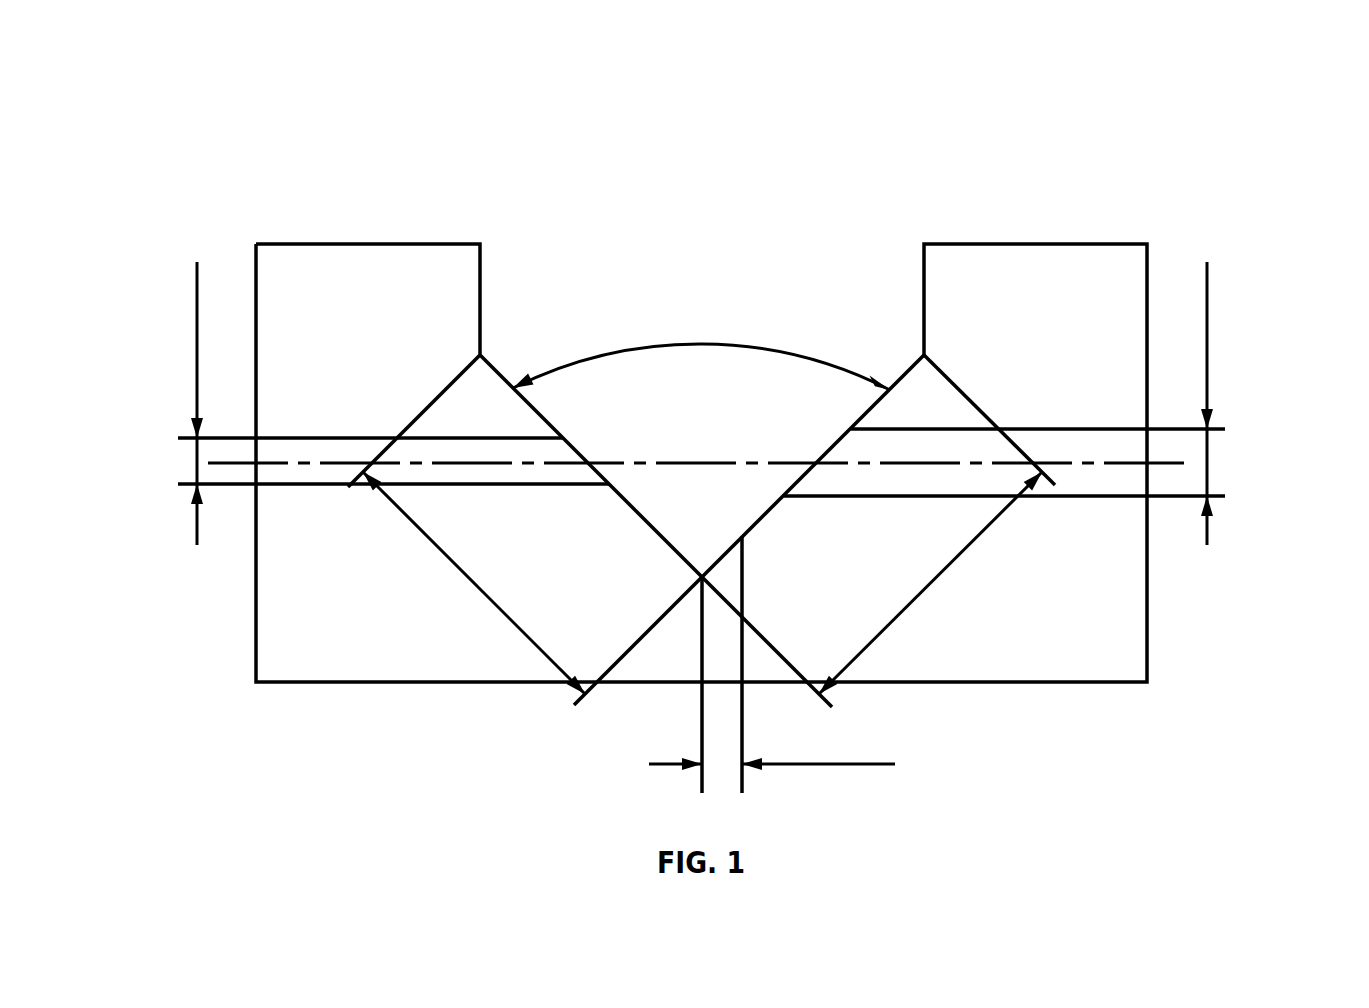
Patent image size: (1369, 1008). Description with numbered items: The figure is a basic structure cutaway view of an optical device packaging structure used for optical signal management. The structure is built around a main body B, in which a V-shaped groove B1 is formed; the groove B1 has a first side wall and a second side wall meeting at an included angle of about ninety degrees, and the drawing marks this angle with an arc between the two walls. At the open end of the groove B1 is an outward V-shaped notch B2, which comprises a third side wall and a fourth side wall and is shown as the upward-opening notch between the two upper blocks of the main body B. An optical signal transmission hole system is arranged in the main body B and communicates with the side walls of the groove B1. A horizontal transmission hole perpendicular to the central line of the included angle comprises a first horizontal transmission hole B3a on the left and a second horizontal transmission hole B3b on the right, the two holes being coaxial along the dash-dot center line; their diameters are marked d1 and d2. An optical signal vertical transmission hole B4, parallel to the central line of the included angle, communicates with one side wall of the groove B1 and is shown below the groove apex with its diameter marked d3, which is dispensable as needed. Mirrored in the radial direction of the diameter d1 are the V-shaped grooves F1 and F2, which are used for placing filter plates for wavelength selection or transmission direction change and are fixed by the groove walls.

The main body B is at (1003, 627).
The V-shaped groove B1 is at (658, 522).
The outward V-shaped notch B2 is at (482, 282).
The first horizontal transmission hole B3a is at (327, 447).
The second horizontal transmission hole B3b is at (1074, 450).
The optical signal vertical transmission hole B4 is at (720, 655).
The V-shaped groove F1 is at (474, 583).
The V-shaped groove F2 is at (930, 583).
The hole diameter d1 is at (135, 403).
The hole diameter d2 is at (1269, 403).
The hole diameter d3 is at (772, 800).